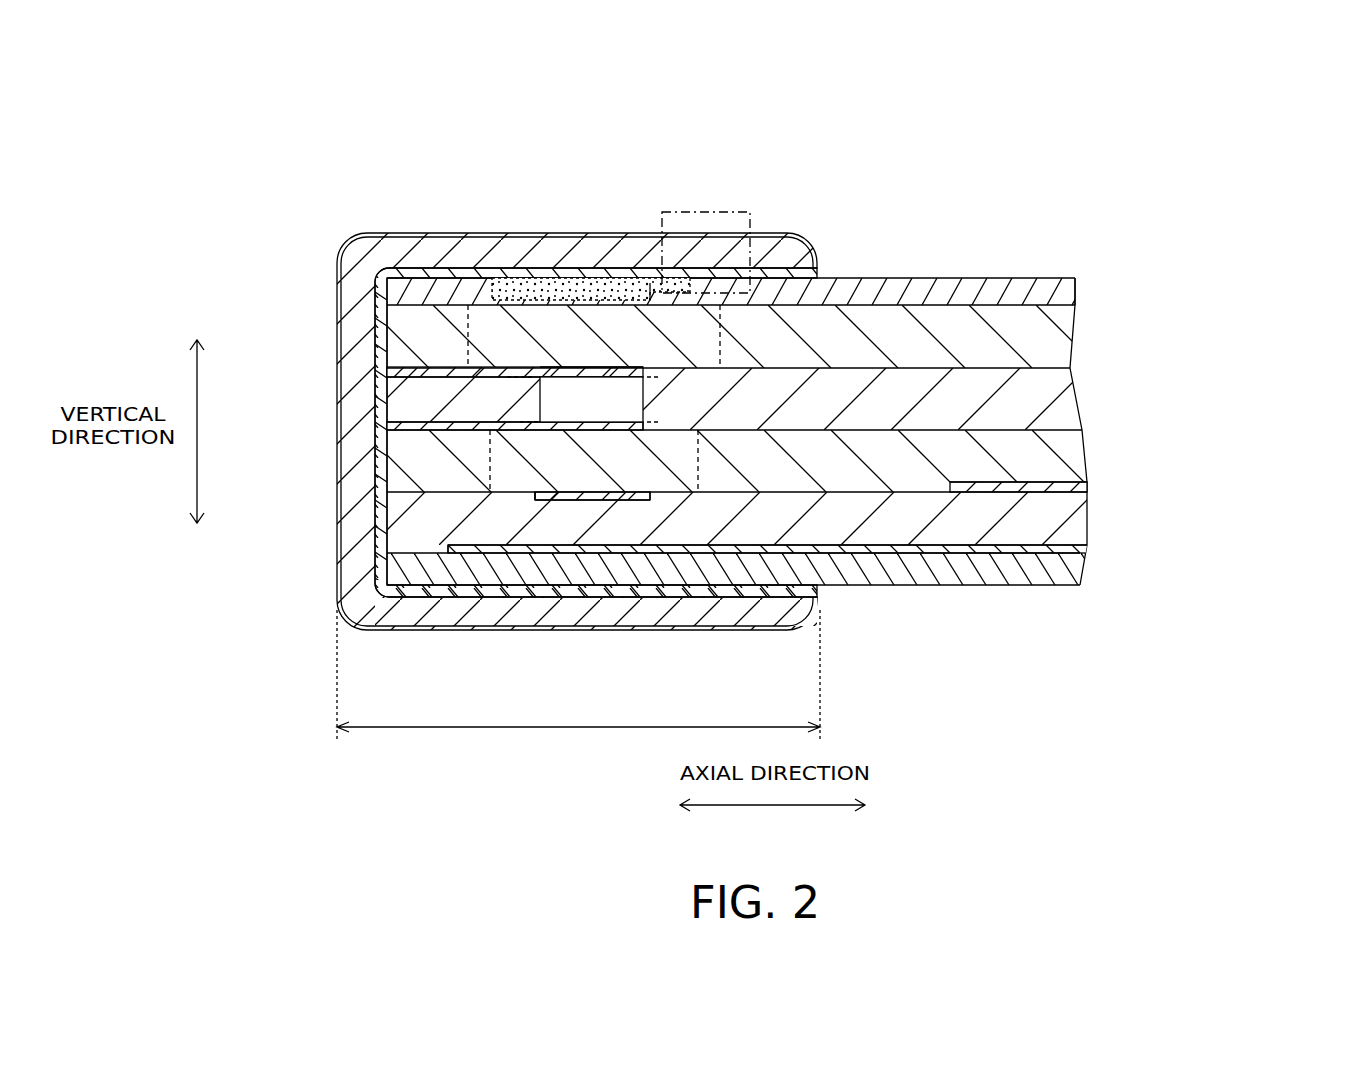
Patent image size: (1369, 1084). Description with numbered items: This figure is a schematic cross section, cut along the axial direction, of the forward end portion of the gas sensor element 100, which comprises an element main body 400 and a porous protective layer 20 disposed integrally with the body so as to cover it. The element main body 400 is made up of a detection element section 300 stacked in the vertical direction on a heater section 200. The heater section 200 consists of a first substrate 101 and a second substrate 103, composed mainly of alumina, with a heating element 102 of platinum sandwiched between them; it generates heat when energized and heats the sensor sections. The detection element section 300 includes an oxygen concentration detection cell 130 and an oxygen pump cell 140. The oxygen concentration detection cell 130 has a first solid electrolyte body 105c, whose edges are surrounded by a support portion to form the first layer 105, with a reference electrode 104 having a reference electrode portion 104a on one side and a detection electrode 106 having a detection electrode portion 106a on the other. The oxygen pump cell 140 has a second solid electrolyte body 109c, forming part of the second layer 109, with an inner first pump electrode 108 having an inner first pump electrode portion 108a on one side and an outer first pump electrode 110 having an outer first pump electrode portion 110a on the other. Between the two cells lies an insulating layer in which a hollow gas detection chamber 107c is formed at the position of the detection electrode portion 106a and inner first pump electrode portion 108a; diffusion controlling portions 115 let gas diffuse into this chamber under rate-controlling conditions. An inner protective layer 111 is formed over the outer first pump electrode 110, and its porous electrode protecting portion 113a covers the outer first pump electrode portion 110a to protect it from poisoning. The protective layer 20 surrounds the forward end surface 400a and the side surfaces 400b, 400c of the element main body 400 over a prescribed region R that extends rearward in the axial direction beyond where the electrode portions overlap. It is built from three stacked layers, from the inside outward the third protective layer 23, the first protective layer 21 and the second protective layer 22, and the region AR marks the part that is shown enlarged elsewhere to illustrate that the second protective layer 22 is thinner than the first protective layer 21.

The gas sensor element 100 is at (921, 164).
The porous protective layer 20 is at (537, 385).
The first protective layer 21 is at (342, 244).
The second protective layer 22 is at (392, 232).
The third protective layer 23 is at (375, 293).
The inner first pump electrode portion 108a is at (553, 367).
The outer first pump electrode portion 110a is at (560, 300).
The electrode protecting portion 113a is at (604, 300).
The region AR is at (712, 210).
The element main body 400 is at (795, 440).
The forward end surface 400a is at (372, 535).
The side surface 400b is at (882, 278).
The side surface 400c is at (906, 587).
The inner protective layer 111 is at (1050, 280).
The second solid electrolyte body 109c is at (495, 338).
The diffusion controlling portions 115 is at (575, 402).
The gas detection chamber 107c is at (737, 399).
The first solid electrolyte body 105c is at (500, 467).
The reference electrode portion 104a is at (535, 498).
The detection electrode portion 106a is at (600, 432).
The prescribed region R is at (578, 675).
The outer first pump electrode 110 is at (610, 306).
The second layer 109 is at (1040, 343).
The inner first pump electrode 108 is at (613, 367).
The oxygen pump cell 140 is at (809, 332).
The detection element section 300 is at (759, 381).
The detection electrode 106 is at (640, 432).
The first layer 105 is at (612, 490).
The reference electrode 104 is at (853, 492).
The oxygen concentration detection cell 130 is at (809, 457).
The second substrate 103 is at (1053, 522).
The heating element 102 is at (1083, 554).
The first substrate 101 is at (1073, 586).
The heater section 200 is at (836, 559).